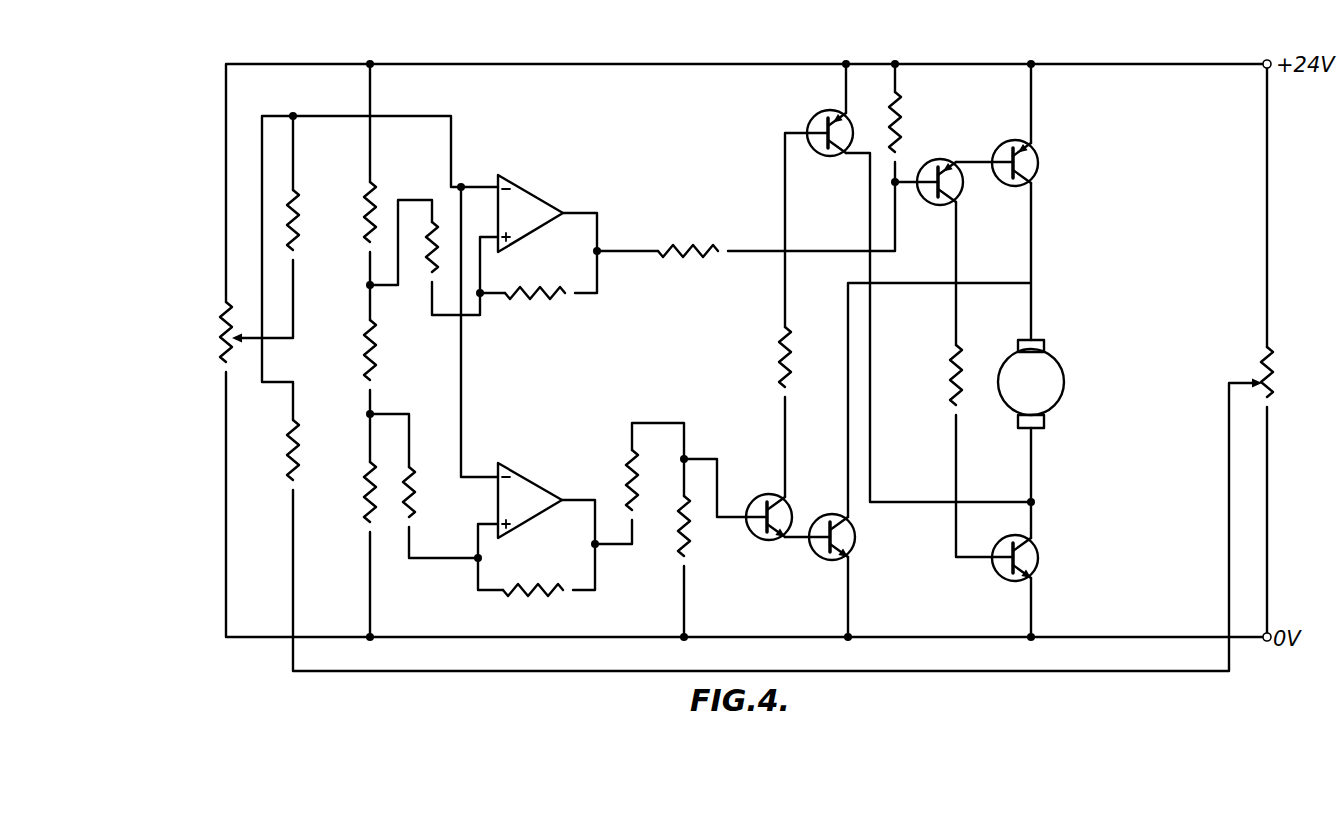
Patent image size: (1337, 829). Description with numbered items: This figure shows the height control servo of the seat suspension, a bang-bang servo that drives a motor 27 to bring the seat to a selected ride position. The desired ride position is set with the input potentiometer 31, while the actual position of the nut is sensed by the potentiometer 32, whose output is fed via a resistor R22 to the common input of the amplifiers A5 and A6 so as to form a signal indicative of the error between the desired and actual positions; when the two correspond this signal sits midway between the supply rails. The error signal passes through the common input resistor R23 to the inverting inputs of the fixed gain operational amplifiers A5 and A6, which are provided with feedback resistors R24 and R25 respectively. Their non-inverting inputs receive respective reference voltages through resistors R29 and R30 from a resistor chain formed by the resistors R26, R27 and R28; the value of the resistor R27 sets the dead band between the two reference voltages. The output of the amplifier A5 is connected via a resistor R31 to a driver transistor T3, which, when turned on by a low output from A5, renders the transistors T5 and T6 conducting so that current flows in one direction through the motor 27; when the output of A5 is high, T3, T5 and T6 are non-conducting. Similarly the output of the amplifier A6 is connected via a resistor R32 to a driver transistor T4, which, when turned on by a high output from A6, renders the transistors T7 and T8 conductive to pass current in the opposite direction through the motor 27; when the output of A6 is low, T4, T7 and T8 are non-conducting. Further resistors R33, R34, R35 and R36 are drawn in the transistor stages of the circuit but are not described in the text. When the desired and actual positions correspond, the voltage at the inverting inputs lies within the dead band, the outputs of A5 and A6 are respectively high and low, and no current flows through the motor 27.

The resistor R22 is at (317, 450).
The common input resistor R23 is at (316, 229).
The feedback resistor R24 is at (535, 312).
The feedback resistor R25 is at (533, 609).
The resistor R26 is at (348, 202).
The resistor R27 is at (347, 350).
The resistor R28 is at (347, 492).
The resistor R29 is at (427, 268).
The resistor R30 is at (434, 492).
The resistor R31 is at (688, 231).
The resistor R32 is at (610, 477).
The resistor R33 is at (922, 121).
The resistor R34 is at (707, 534).
The resistor R35 is at (934, 375).
The resistor R36 is at (761, 357).
The operational amplifier A5 is at (530, 213).
The operational amplifier A6 is at (530, 500).
The driver transistor T3 is at (955, 190).
The driver transistor T4 is at (769, 497).
The transistor T5 is at (1031, 163).
The transistor T6 is at (1030, 558).
The transistor T7 is at (821, 119).
The transistor T8 is at (847, 537).
The motor 27 is at (1048, 358).
The input potentiometer 31 is at (237, 380).
The potentiometer 32 is at (1282, 359).